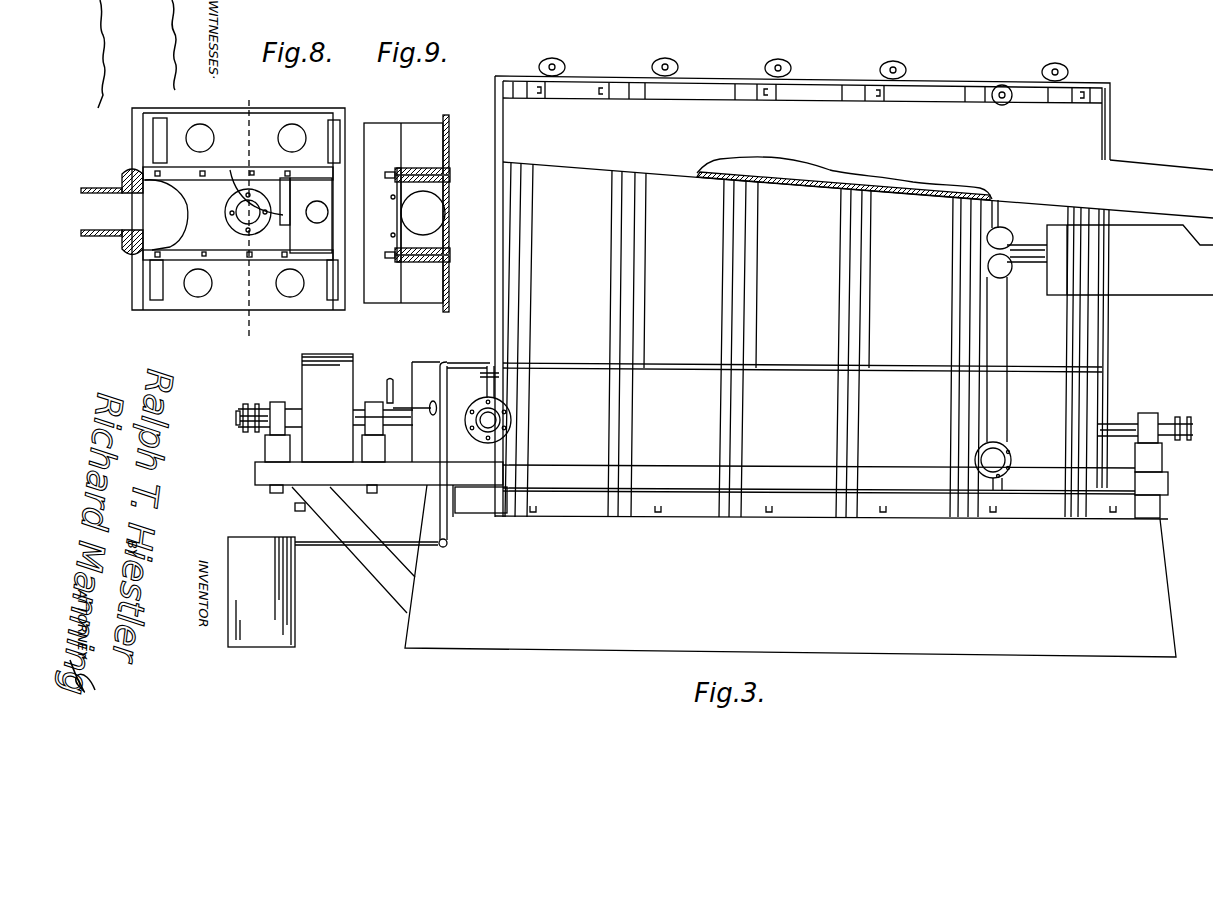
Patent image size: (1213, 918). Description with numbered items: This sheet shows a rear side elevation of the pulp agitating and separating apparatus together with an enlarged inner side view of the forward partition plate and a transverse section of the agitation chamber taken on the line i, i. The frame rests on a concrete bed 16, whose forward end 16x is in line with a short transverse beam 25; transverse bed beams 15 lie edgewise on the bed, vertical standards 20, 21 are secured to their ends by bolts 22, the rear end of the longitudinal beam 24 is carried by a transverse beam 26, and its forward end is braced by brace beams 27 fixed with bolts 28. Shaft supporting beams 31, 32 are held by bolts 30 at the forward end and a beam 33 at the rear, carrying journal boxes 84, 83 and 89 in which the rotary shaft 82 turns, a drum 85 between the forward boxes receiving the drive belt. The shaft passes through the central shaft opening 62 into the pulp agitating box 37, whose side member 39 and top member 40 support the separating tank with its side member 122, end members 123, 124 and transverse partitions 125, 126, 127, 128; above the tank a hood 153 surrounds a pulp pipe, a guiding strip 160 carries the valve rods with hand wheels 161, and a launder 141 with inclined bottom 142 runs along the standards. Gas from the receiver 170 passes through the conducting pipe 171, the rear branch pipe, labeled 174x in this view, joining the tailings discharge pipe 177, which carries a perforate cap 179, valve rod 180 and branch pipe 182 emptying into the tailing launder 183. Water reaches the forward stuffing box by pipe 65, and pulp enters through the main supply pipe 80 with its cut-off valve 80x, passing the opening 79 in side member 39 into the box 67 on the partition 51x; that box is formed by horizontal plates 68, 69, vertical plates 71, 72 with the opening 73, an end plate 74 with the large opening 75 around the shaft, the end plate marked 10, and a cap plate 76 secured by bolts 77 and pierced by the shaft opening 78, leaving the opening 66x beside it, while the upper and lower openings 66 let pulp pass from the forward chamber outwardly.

In FIG. 8, the frame plate 10 is at (336, 130).
In FIG. 8, the section line i i is at (245, 215).
In FIG. 8, the vertical plate 71 is at (158, 140).
In FIG. 8, the openings 66 is at (278, 138).
In FIG. 8, the opening 66x is at (312, 222).
In FIG. 8, the cap plate 76 is at (228, 250).
In FIG. 8, the vertical end plate 74 is at (290, 206).
In FIG. 8, the shaft opening 78 is at (233, 222).
In FIG. 8, the upper side plate 68 is at (250, 188).
In FIG. 9, the upper side plate 68 is at (421, 170).
In FIG. 8, the opening 79 is at (144, 208).
In FIG. 9, the opening 79 is at (423, 213).
In FIG. 8, the opening 73 is at (192, 219).
In FIG. 8, the pulp conducting box 67 is at (128, 178).
In FIG. 9, the pulp conducting box 67 is at (398, 264).
In FIG. 8, the main supply pipe 80 is at (108, 236).
In FIG. 3, the main supply pipe 80 is at (478, 438).
In FIG. 3, the cut-off valve 80x is at (488, 400).
In FIG. 8, the side member 39 is at (138, 154).
In FIG. 9, the side member 39 is at (403, 213).
In FIG. 3, the side member 39 is at (819, 464).
In FIG. 8, the vertical plate 72 is at (160, 288).
In FIG. 8, the transverse partition 51x is at (266, 305).
In FIG. 9, the transverse partition 51x is at (452, 134).
In FIG. 8, the lower side plate 69 is at (305, 258).
In FIG. 9, the lower side plate 69 is at (447, 264).
In FIG. 9, the pulp opening 75 is at (448, 242).
In FIG. 9, the bolts 77 is at (446, 183).
In FIG. 3, the forward end member 123 is at (517, 92).
In FIG. 3, the rear end member 124 is at (1090, 92).
In FIG. 3, the transverse partition 125 is at (628, 88).
In FIG. 3, the transverse partition 126 is at (745, 88).
In FIG. 3, the transverse partition 127 is at (858, 88).
In FIG. 3, the transverse partition 128 is at (978, 88).
In FIG. 3, the concentrate launder 141 is at (858, 170).
In FIG. 3, the launder bottom member 142 is at (844, 161).
In FIG. 3, the box frame or hood 153 is at (668, 92).
In FIG. 3, the guiding strip 160 is at (818, 82).
In FIG. 3, the hand wheel 161 is at (558, 60).
In FIG. 3, the vertical standard 20 is at (507, 326).
In FIG. 3, the vertical standard 21 is at (524, 320).
In FIG. 3, the tank side member 122 is at (792, 261).
In FIG. 3, the shaft opening 62 is at (802, 383).
In FIG. 3, the transverse bed beams 15 is at (516, 495).
In FIG. 3, the concrete foundation or bed 16 is at (533, 632).
In FIG. 3, the forward end of foundation 16x is at (1182, 596).
In FIG. 3, the tailings discharge pipe 177 is at (1000, 328).
In FIG. 3, the perforate cap 179 is at (986, 238).
In FIG. 3, the valve rod 180 is at (990, 212).
In FIG. 3, the branch pipe 182 is at (1030, 248).
In FIG. 3, the tailing launder 183 is at (1212, 290).
In FIG. 3, the post 174x is at (1098, 373).
In FIG. 3, the rotary shaft 82 is at (1115, 428).
In FIG. 3, the journal box 89 is at (1152, 413).
In FIG. 3, the transverse shaft supporting beam 33 is at (1162, 459).
In FIG. 3, the longitudinal beam 24 is at (305, 476).
In FIG. 3, the transverse beam 26 is at (1158, 514).
In FIG. 3, the drum 85 is at (313, 380).
In FIG. 3, the journal box 84 is at (274, 402).
In FIG. 3, the journal box 83 is at (372, 405).
In FIG. 3, the transverse shaft supporting beam 31 is at (270, 448).
In FIG. 3, the transverse shaft supporting beam 32 is at (370, 448).
In FIG. 3, the water supply pipe 65 is at (412, 394).
In FIG. 3, the pulp agitating box 37 is at (413, 368).
In FIG. 3, the top member 40 is at (438, 362).
In FIG. 3, the bolts 22 is at (490, 502).
In FIG. 3, the short transverse beam 25 is at (435, 500).
In FIG. 3, the bolts 30 is at (362, 505).
In FIG. 3, the bolts 28 is at (298, 511).
In FIG. 3, the brace beams 27 is at (385, 568).
In FIG. 3, the gas conducting pipe 171 is at (337, 548).
In FIG. 3, the receiver 170 is at (272, 638).